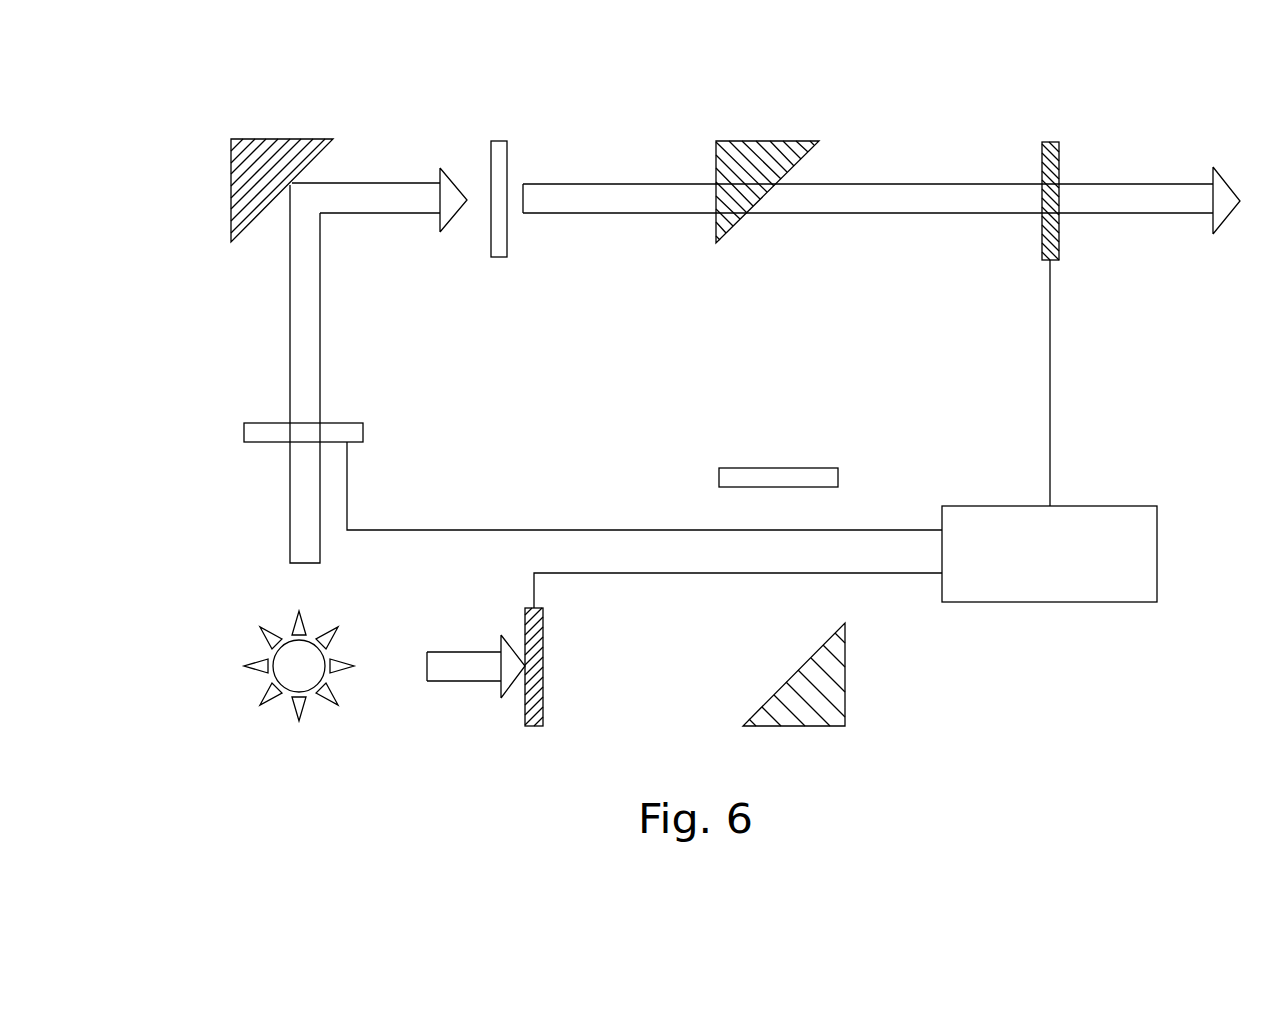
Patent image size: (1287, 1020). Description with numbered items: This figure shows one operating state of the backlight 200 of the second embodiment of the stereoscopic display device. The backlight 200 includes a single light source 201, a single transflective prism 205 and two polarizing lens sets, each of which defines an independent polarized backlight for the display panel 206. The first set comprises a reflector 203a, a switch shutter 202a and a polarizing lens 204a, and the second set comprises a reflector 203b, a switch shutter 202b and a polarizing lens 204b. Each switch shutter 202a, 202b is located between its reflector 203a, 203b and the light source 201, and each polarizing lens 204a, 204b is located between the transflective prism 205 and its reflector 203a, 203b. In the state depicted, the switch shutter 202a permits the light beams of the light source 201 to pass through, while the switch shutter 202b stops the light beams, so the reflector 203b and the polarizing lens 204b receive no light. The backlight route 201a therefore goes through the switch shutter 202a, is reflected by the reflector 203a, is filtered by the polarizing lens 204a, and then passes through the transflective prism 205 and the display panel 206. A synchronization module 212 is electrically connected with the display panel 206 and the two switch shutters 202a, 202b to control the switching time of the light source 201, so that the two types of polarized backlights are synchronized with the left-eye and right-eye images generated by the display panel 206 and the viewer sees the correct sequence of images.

The backlight 200 is at (191, 87).
The light source 201 is at (303, 678).
The backlight route 201a is at (297, 505).
The switch shutter 202a is at (350, 435).
The switch shutter 202b is at (535, 727).
The reflector 203a is at (280, 143).
The reflector 203b is at (797, 715).
The polarizing lens 204a is at (496, 147).
The polarizing lens 204b is at (828, 476).
The transflective prism 205 is at (763, 143).
The display panel 206 is at (1050, 142).
The synchronization module 212 is at (1158, 555).